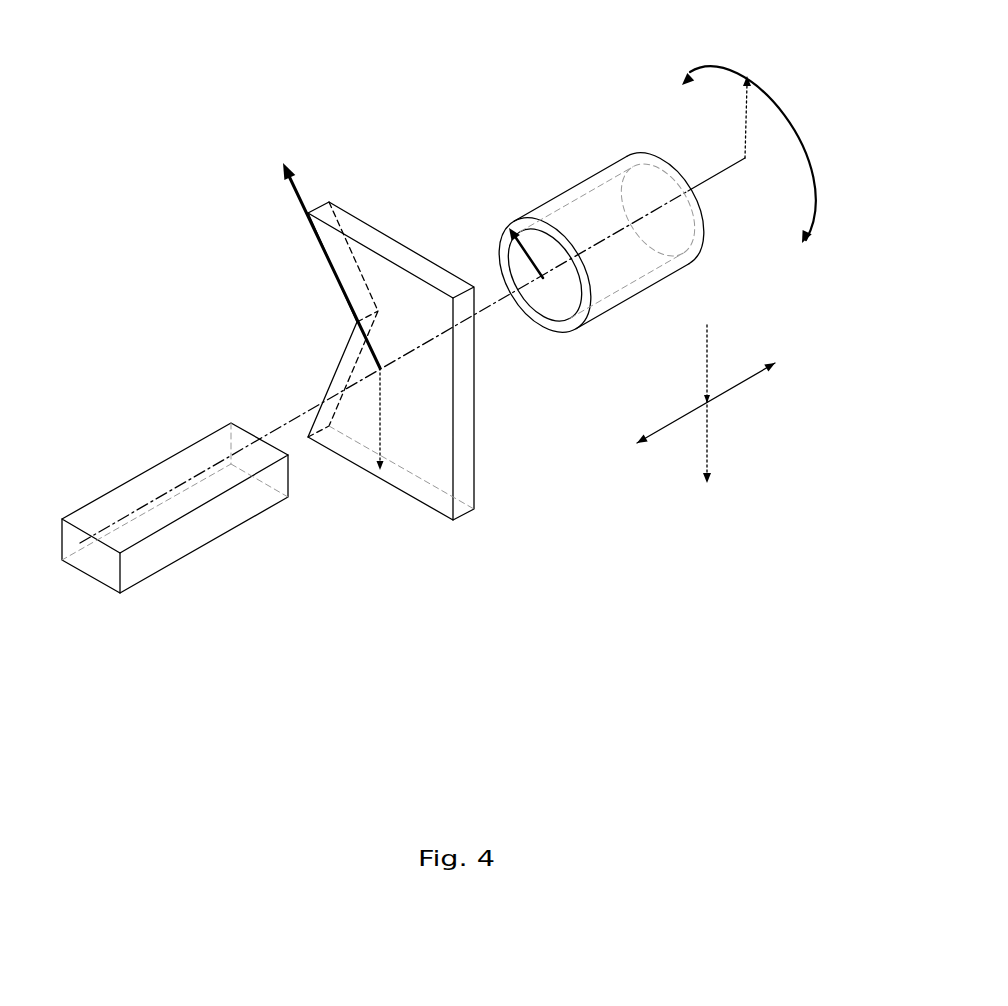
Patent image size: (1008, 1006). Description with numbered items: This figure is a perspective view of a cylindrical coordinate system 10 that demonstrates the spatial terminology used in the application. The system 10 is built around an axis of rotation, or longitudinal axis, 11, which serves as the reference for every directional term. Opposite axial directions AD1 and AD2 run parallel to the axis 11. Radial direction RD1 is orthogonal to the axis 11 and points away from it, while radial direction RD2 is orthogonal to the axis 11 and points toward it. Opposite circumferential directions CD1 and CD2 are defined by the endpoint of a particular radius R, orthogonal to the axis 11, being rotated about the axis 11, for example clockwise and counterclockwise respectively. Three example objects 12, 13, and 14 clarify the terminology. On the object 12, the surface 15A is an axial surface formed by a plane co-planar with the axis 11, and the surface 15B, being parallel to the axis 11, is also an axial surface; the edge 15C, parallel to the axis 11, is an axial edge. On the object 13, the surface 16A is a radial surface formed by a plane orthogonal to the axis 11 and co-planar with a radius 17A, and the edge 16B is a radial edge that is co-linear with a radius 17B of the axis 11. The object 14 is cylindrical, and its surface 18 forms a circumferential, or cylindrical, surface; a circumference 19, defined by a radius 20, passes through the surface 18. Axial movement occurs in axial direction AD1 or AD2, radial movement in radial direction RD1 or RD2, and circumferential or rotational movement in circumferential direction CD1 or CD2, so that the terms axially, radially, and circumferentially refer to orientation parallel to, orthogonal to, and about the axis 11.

The cylindrical coordinate system 10 is at (263, 283).
The axis of rotation 11 is at (688, 192).
The object 12 is at (147, 580).
The object 13 is at (483, 510).
The object 14 is at (622, 303).
The axial surface 15A is at (143, 492).
The axial surface 15B is at (192, 538).
The axial edge 15C is at (167, 458).
The radial surface 16A is at (385, 280).
The radial edge 16B is at (340, 272).
The radius 17A is at (380, 417).
The radius 17B is at (300, 195).
The circumferential surface 18 is at (572, 192).
The circumference 19 is at (500, 243).
The radius 20 is at (498, 263).
The radius R is at (747, 110).
The circumferential direction CD1 is at (820, 207).
The circumferential direction CD2 is at (707, 62).
The radial direction RD1 is at (707, 452).
The radial direction RD2 is at (707, 340).
The axial direction AD1 is at (733, 385).
The axial direction AD2 is at (672, 423).